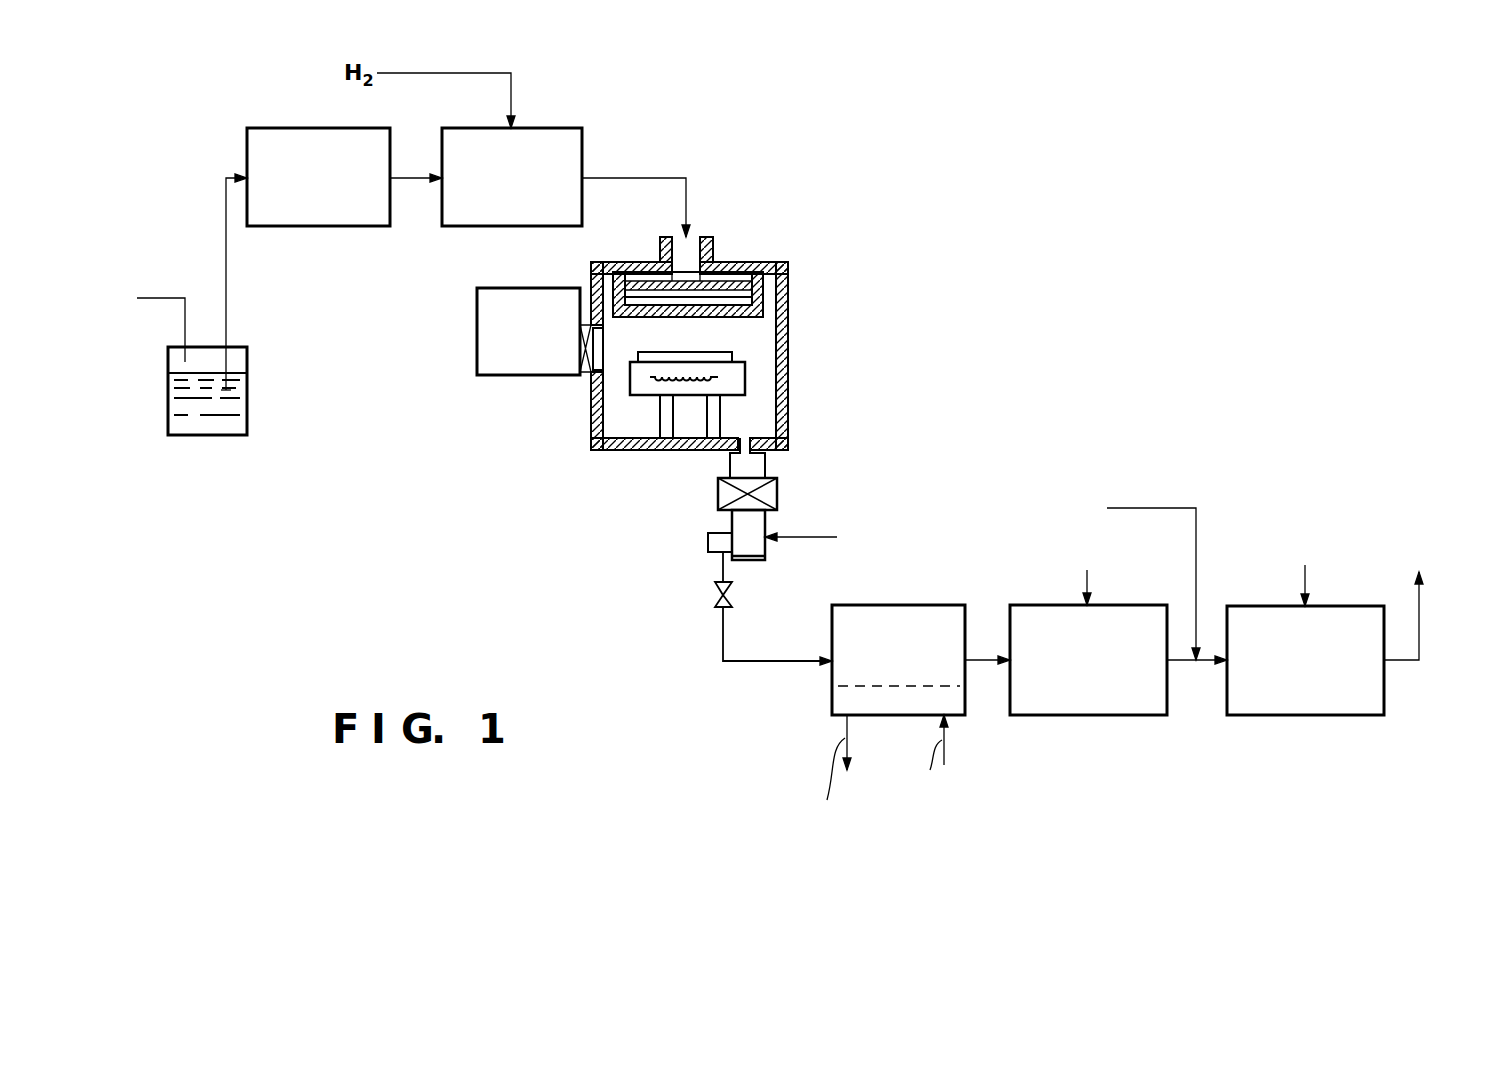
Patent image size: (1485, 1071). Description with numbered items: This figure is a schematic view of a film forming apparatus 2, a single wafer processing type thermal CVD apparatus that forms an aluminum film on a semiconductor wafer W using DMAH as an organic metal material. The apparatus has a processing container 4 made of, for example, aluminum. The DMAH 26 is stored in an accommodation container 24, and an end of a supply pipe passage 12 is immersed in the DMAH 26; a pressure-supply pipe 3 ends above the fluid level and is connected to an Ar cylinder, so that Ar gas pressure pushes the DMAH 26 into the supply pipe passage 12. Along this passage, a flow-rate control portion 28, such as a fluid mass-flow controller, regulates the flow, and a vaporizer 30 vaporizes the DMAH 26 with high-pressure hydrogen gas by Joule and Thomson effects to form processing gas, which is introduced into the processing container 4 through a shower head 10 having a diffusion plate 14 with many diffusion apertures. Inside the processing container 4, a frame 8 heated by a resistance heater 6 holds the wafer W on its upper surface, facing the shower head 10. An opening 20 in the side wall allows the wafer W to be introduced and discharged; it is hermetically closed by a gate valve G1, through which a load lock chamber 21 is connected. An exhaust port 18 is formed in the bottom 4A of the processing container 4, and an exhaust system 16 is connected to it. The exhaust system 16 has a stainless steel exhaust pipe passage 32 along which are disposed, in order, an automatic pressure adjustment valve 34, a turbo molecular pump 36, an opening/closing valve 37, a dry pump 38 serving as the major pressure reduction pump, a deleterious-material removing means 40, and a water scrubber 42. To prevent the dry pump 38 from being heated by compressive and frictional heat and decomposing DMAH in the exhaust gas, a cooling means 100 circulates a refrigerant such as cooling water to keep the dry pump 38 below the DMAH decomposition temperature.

The film forming apparatus 2 is at (822, 226).
The pressure-supply pipe 3 is at (172, 292).
The processing container 4 is at (714, 376).
The bottom 4A is at (612, 450).
The resistance heater 6 is at (716, 386).
The frame 8 is at (745, 378).
The shower head 10 is at (762, 302).
The supply pipe passage 12 is at (688, 198).
The diffusion plate 14 is at (722, 262).
The exhaust system 16 is at (690, 550).
The exhaust port 18 is at (755, 442).
The opening 20 is at (606, 345).
The load lock chamber 21 is at (550, 288).
The accommodation container 24 is at (242, 437).
The DMAH 26 is at (185, 437).
The flow-rate control portion 28 is at (268, 128).
The vaporizer 30 is at (558, 128).
The exhaust pipe passage 32 is at (742, 462).
The automatic pressure adjustment valve 34 is at (778, 494).
The turbo molecular pump 36 is at (762, 552).
The opening/closing valve 37 is at (728, 593).
The dry pump 38 is at (830, 642).
The deleterious-material removing means 40 is at (1160, 715).
The water scrubber 42 is at (1350, 715).
The cooling means 100 is at (968, 712).
The semiconductor wafer W is at (730, 353).
The gate valve G1 is at (592, 380).